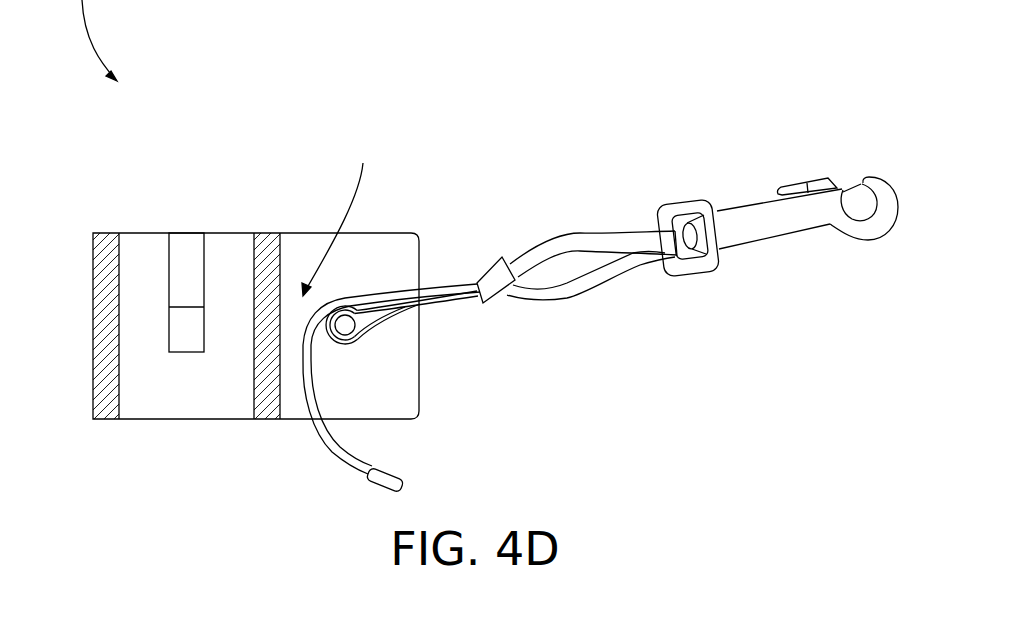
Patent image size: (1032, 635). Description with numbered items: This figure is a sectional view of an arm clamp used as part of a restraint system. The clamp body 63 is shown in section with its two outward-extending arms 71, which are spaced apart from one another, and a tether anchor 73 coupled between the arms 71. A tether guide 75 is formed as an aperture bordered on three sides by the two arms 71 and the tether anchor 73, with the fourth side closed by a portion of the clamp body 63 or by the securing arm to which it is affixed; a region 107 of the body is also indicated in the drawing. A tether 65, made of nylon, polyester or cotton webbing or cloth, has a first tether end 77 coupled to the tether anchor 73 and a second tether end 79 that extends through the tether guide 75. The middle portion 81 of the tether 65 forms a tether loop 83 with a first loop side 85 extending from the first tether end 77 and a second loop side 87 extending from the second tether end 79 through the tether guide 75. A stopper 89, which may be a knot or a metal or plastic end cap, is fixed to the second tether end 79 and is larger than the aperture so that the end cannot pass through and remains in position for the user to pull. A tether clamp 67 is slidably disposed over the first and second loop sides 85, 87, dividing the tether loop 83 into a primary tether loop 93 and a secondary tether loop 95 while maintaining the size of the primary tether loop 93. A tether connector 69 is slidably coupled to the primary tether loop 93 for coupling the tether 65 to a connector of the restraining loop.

The clamp body 63 is at (103, 233).
The second hatched wall 107 is at (231, 240).
The outward-extending arms 71 is at (373, 233).
The tether guide 75 is at (338, 215).
The secondary tether loop 95 is at (432, 283).
The middle portion 81 is at (455, 285).
The first tether end 77 is at (370, 332).
The tether anchor 73 is at (345, 328).
The second tether end 79 is at (316, 432).
The stopper 89 is at (377, 488).
The tether clamp 67 is at (495, 258).
The tether loop 83 is at (578, 233).
The second loop side 87 is at (533, 250).
The first loop side 85 is at (558, 292).
The primary tether loop 93 is at (626, 268).
The tether 65 is at (650, 243).
The tether connector 69 is at (773, 215).